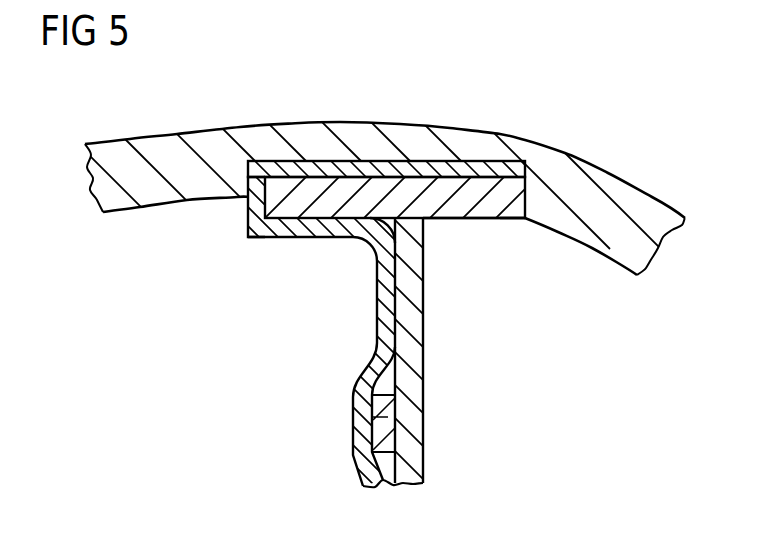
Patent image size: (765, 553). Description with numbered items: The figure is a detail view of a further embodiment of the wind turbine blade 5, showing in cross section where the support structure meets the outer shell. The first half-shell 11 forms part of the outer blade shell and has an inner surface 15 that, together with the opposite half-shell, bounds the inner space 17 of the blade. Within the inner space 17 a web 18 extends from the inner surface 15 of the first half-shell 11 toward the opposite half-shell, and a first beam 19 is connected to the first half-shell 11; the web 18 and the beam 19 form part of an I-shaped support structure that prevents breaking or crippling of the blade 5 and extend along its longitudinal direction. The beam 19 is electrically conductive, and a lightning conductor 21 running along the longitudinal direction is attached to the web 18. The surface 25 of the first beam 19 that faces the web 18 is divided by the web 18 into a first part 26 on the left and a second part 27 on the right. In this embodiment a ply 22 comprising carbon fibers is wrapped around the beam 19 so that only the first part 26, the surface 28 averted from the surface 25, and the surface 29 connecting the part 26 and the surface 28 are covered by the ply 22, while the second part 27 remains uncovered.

The wind turbine blade 5 is at (572, 110).
The first half-shell 11 is at (208, 144).
The inner surface 15 is at (125, 213).
The inner space 17 is at (238, 358).
The web 18 is at (414, 388).
The first beam 19 is at (487, 188).
The lightning conductor 21 is at (354, 397).
The ply 22 is at (362, 480).
The surface 25 is at (516, 228).
The first part 26 is at (297, 238).
The second part 27 is at (471, 225).
The surface 28 is at (383, 168).
The surface 29 is at (253, 200).